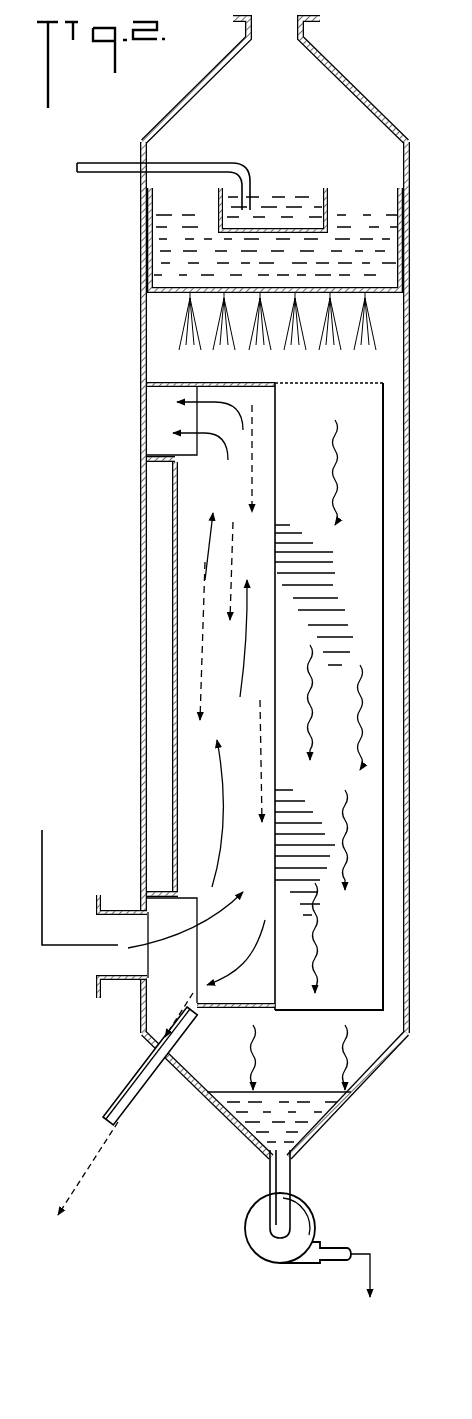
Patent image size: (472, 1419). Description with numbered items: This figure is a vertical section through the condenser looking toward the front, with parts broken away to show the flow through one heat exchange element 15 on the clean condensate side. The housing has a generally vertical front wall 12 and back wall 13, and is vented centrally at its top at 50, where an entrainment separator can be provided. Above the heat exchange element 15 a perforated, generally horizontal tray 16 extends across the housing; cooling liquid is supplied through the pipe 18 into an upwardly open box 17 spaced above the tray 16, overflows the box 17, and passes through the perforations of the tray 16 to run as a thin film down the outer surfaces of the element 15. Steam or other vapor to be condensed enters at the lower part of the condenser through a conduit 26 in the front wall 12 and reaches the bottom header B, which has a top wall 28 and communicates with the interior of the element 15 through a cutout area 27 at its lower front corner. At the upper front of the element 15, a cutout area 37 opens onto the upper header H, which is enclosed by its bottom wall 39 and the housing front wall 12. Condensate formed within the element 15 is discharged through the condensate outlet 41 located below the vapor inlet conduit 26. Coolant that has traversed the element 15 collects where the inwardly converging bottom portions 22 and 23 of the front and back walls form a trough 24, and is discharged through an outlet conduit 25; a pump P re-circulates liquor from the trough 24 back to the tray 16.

The vent 50 is at (337, 53).
The back wall 13 is at (413, 600).
The bottom portion of back wall 23 is at (370, 1072).
The tray 16 is at (165, 288).
The box 17 is at (328, 204).
The pipe 18 is at (212, 163).
The heat exchange element 15 is at (378, 378).
The upper header H is at (137, 432).
The bottom wall 39 is at (157, 468).
The front wall 12 is at (140, 608).
The cutout area 37 is at (196, 459).
The top wall 28 is at (158, 892).
The cutout area 27 is at (193, 884).
The conduit 26 is at (125, 912).
The bottom header B is at (137, 1007).
The bottom portion of front wall 22 is at (232, 1125).
The trough 24 is at (325, 1133).
The condensate outlet 41 is at (133, 1082).
The outlet conduit 25 is at (283, 1177).
The pump P is at (320, 1212).